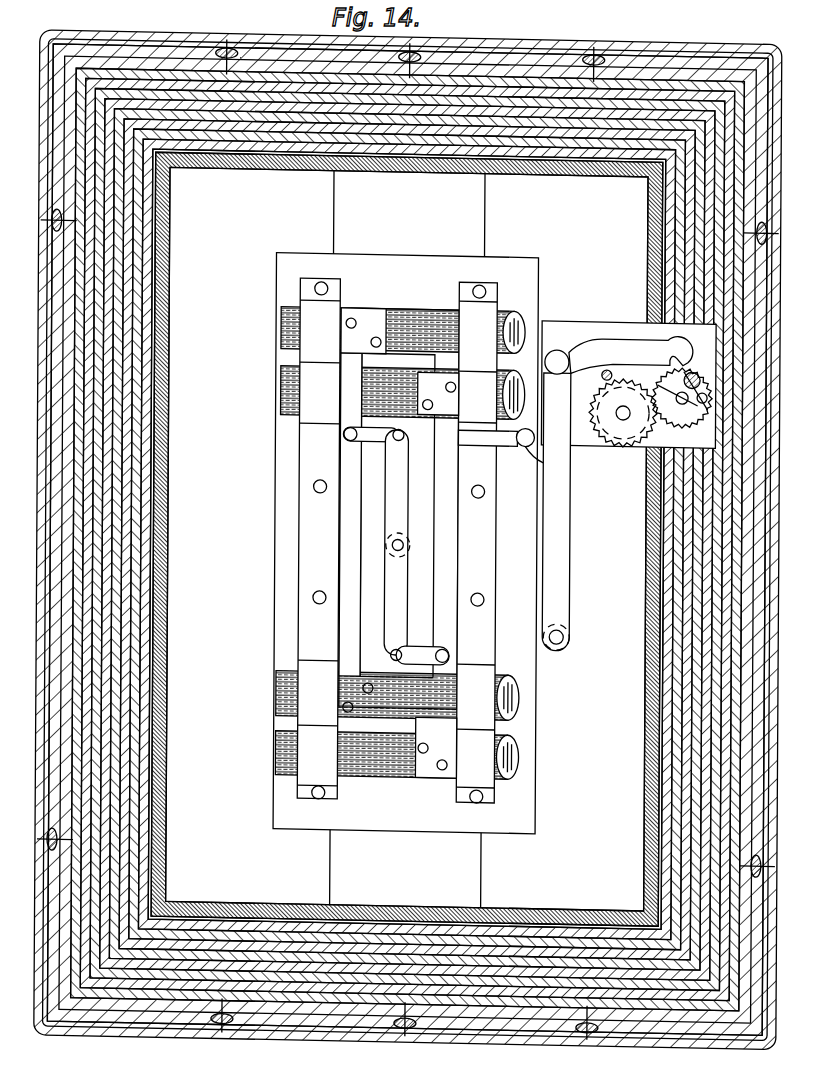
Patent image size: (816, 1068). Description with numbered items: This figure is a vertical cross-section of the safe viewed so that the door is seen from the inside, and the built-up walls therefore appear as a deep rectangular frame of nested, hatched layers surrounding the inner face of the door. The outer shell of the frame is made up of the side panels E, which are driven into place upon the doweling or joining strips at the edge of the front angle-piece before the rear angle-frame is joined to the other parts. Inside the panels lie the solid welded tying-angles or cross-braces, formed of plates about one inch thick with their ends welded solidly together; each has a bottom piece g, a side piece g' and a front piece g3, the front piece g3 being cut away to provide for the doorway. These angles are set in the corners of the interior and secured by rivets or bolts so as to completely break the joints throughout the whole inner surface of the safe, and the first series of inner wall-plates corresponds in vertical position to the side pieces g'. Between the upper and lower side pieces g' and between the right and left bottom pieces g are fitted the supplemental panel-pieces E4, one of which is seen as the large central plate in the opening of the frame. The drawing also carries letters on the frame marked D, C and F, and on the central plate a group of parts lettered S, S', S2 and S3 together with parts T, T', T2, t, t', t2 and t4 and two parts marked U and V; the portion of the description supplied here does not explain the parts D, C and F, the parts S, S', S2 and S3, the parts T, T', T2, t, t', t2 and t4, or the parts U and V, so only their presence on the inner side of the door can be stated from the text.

The outer frame band D is at (407, 539).
The frame casing C is at (404, 539).
The side panel E is at (402, 539).
The fastening screws F is at (52, 216).
The bottom piece g is at (407, 539).
The side piece g' is at (407, 539).
The front piece g3 is at (248, 300).
The supplemental panel-piece E4 is at (424, 168).
The magnet coils S is at (400, 543).
The coil supporting bars S' is at (397, 540).
The magnet frame S2 is at (366, 558).
The armature link S3 is at (429, 546).
The lever T is at (556, 512).
The pawl arm T' is at (631, 355).
The pivot pin T2 is at (604, 364).
The lever pivot t is at (564, 637).
The link pin t' is at (536, 442).
The lever notch t2 is at (531, 448).
The pivot t4 is at (562, 345).
The ratchet wheel U is at (650, 407).
The escapement plate V is at (620, 426).